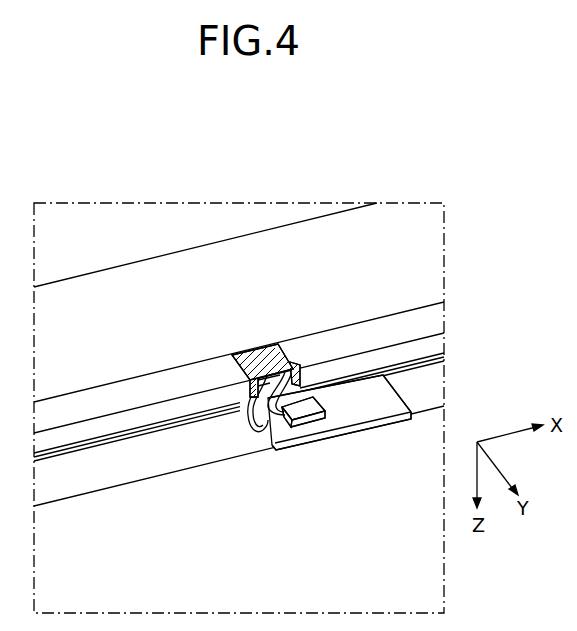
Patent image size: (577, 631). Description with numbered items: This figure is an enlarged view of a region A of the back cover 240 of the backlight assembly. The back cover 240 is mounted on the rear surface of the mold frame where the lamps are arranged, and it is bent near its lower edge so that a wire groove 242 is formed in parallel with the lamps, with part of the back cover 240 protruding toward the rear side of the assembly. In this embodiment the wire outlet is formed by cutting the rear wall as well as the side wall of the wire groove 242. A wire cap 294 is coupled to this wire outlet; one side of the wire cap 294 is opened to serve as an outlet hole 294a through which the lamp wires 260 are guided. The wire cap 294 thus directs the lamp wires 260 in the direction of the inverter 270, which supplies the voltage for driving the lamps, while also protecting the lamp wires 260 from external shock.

The back cover 240 is at (218, 253).
The wire groove 242 is at (436, 346).
The lamp wires 260 is at (265, 436).
The inverter 270 is at (305, 410).
The wire cap 294 is at (254, 353).
The outlet hole 294a is at (294, 367).
The region A is at (444, 579).